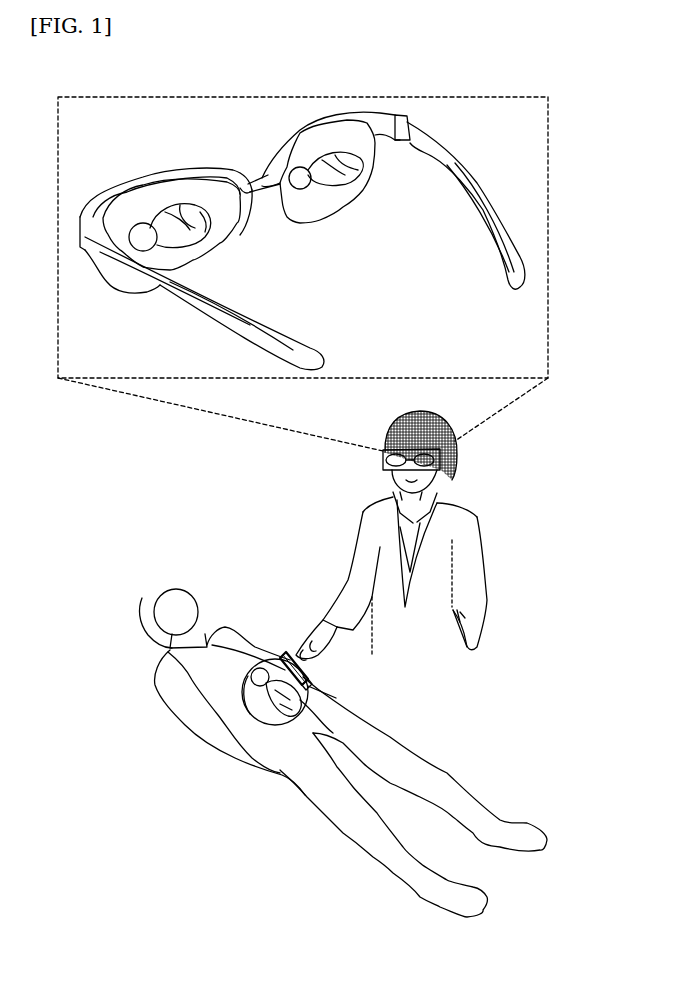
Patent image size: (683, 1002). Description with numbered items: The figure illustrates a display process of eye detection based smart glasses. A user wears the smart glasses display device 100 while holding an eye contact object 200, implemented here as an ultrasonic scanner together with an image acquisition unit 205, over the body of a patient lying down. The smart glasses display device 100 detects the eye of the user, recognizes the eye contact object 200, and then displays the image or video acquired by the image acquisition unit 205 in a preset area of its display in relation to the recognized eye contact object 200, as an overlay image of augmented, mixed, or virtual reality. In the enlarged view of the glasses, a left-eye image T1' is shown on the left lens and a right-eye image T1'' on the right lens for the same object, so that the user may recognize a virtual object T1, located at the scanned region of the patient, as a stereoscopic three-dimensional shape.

The smart glasses display device 100 is at (162, 172).
The left-eye image T1' is at (201, 244).
The right-eye image T1'' is at (328, 207).
The eye contact object 200 is at (287, 652).
The image acquisition unit 205 is at (314, 676).
The virtual object T1 is at (321, 692).